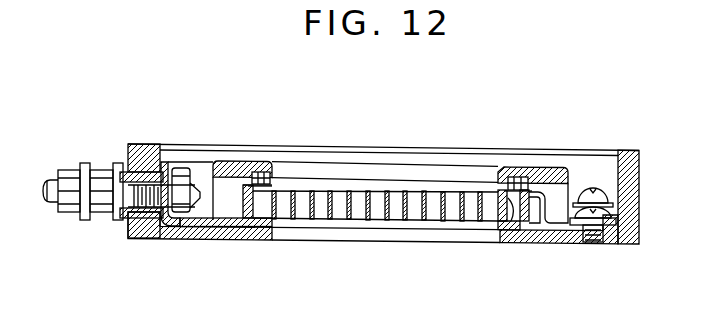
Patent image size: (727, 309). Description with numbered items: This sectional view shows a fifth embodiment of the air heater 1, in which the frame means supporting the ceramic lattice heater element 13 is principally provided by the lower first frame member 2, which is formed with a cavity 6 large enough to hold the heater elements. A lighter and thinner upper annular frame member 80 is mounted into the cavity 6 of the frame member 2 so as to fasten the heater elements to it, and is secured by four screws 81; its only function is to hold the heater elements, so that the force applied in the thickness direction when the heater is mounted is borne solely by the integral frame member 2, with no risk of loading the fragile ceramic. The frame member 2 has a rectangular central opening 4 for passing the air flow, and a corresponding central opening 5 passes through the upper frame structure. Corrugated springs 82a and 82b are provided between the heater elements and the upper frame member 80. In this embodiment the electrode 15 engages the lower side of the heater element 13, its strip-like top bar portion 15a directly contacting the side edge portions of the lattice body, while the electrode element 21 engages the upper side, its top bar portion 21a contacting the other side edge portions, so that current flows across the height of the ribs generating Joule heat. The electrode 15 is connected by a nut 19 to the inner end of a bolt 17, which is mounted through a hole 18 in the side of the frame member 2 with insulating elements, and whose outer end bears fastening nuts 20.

The air heater 1 is at (641, 204).
The first frame member 2 is at (388, 236).
The central opening 4 is at (501, 237).
The central opening 5 is at (495, 167).
The cavity 6 is at (617, 176).
The heater element 13 is at (376, 206).
The electrode 15 is at (206, 232).
The top bar portion of electrode 15a is at (272, 233).
The bolt 17 is at (47, 202).
The hole 18 is at (150, 224).
The nut 19 is at (178, 168).
The fastening nuts 20 is at (104, 208).
The electrode element 21 is at (576, 237).
The top bar portion of electrode element 21a is at (517, 233).
The upper annular frame member 80 is at (228, 161).
The screws 81 is at (586, 192).
The corrugated spring 82a is at (272, 181).
The corrugated spring 82b is at (529, 180).